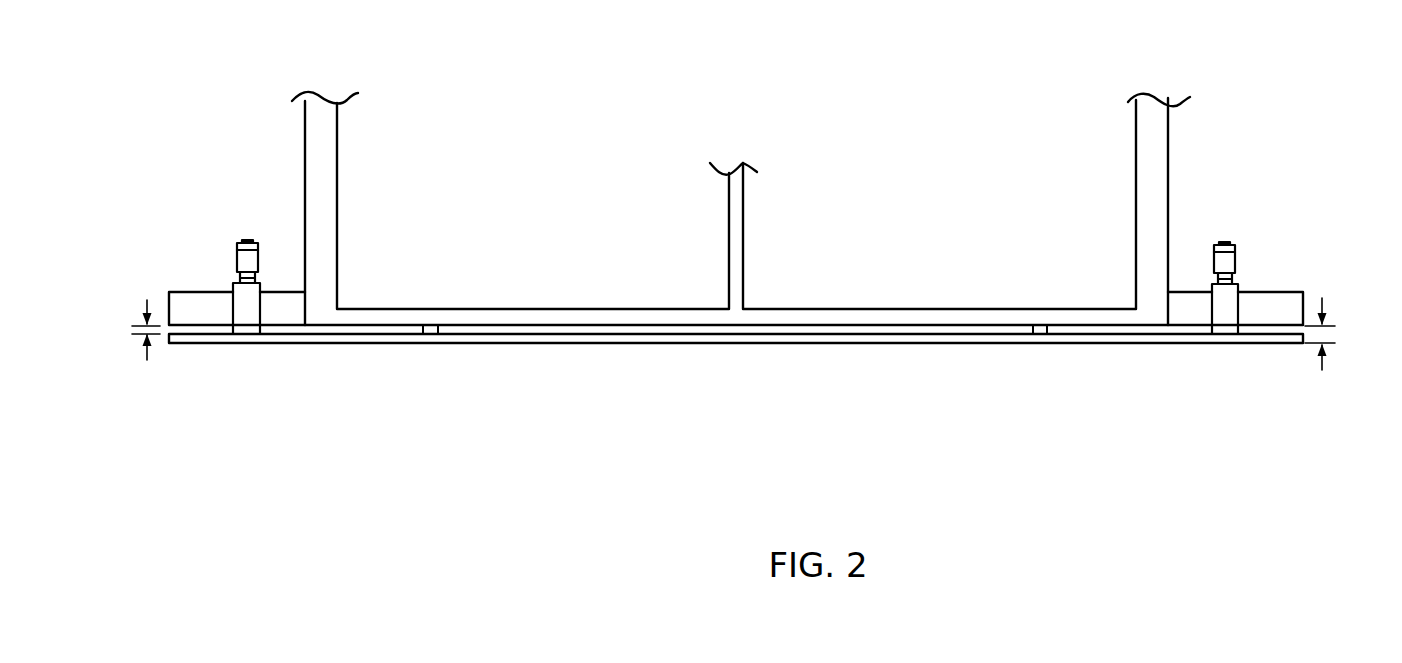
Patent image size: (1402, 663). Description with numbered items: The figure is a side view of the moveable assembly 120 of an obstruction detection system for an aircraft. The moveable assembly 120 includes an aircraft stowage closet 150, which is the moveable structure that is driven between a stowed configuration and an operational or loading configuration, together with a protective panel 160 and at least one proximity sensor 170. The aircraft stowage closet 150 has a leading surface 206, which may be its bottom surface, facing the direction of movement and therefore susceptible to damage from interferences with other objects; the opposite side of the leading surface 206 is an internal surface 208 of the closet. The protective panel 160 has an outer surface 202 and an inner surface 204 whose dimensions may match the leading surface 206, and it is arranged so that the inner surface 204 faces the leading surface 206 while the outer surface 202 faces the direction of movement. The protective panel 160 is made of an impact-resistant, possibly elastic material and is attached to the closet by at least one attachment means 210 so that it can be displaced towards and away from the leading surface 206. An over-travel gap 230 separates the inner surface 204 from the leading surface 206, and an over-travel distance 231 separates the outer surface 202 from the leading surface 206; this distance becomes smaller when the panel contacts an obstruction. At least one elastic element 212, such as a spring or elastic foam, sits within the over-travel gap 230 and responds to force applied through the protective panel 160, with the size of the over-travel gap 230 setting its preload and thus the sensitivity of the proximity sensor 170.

The moveable assembly 120 is at (188, 118).
The aircraft stowage closet 150 is at (318, 193).
The proximity sensor 170 is at (225, 274).
The protective panel 160 is at (540, 340).
The outer surface 202 is at (902, 348).
The inner surface 204 is at (949, 330).
The leading surface 206 is at (858, 333).
The internal surface 208 is at (763, 305).
The attachment means 210 is at (418, 335).
The elastic element 212 is at (1041, 338).
The over-travel gap 230 is at (126, 327).
The over-travel distance 231 is at (1348, 328).